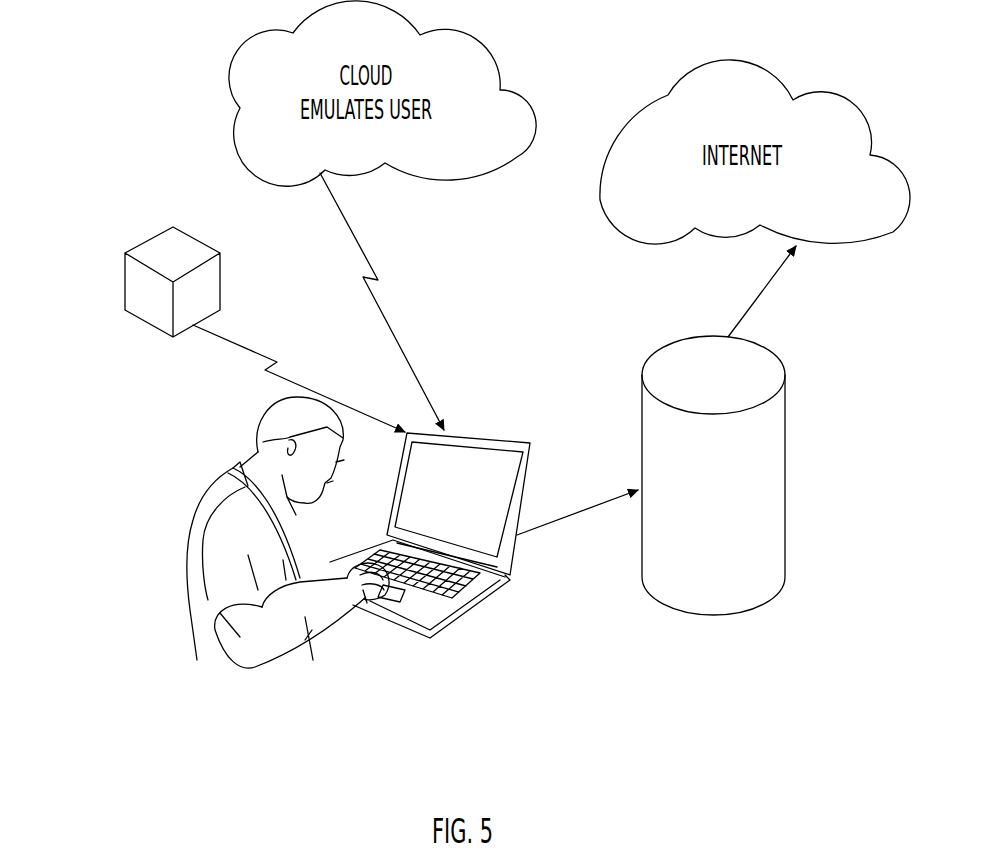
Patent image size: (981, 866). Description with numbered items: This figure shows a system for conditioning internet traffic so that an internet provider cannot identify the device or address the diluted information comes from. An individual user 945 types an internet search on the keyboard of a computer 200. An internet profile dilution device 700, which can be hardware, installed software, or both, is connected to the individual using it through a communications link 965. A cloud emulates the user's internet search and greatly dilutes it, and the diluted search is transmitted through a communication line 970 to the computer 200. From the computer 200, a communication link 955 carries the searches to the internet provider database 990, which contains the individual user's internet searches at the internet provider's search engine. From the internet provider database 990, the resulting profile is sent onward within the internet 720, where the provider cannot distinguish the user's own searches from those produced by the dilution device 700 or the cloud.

The internet profile dilution device 700 is at (126, 324).
The communications link 965 is at (299, 378).
The communication line 970 is at (382, 301).
The communication link 955 is at (577, 507).
The internet 720 is at (759, 291).
The internet provider database 990 is at (794, 457).
The computer 200 is at (517, 622).
The individual user 945 is at (290, 688).